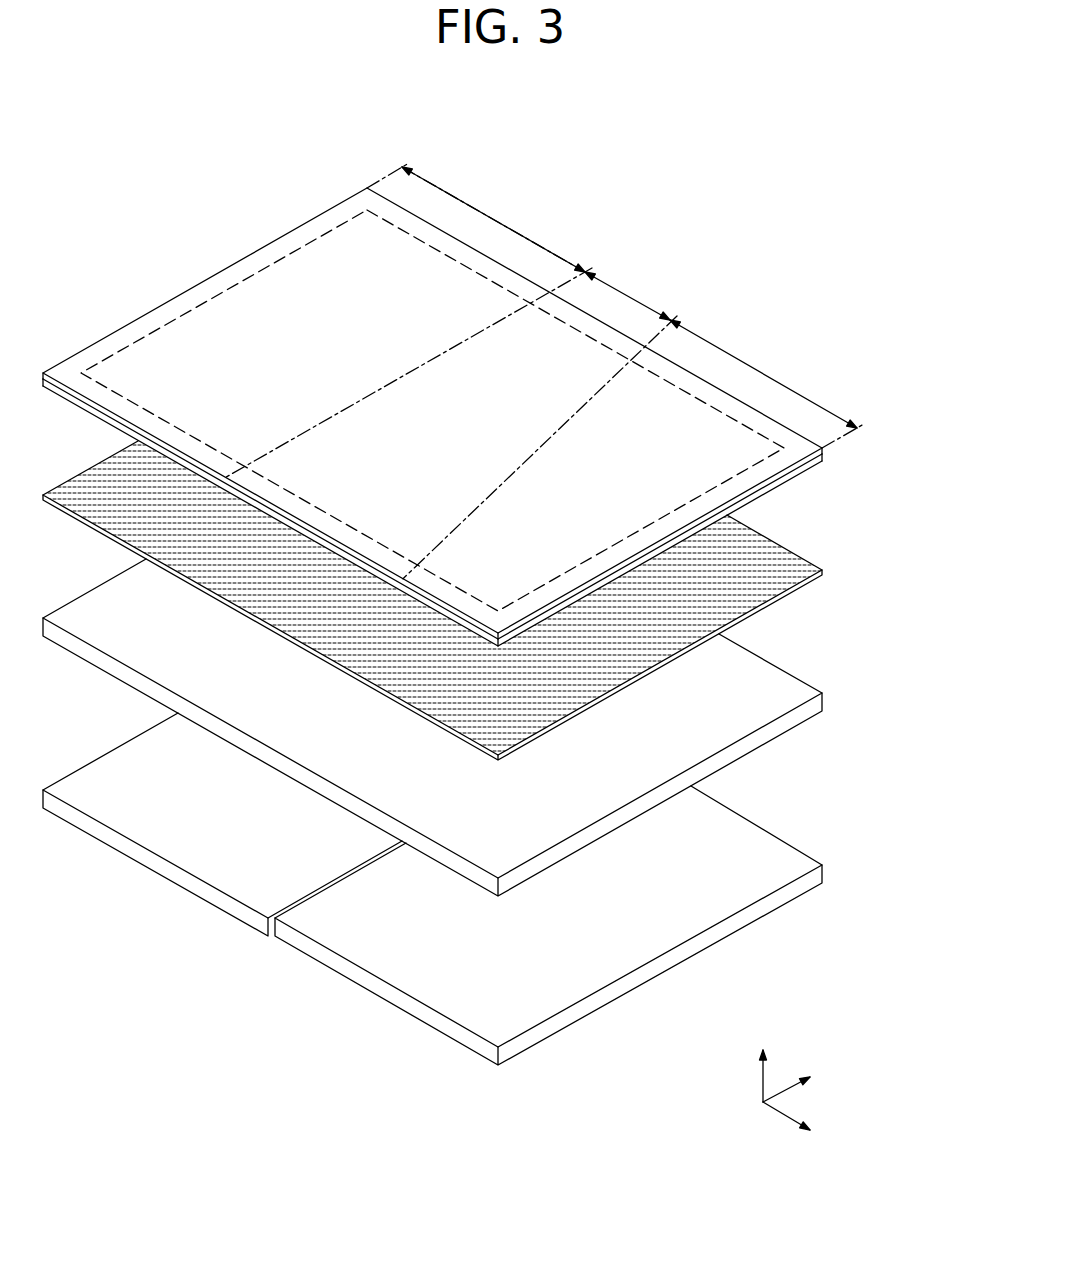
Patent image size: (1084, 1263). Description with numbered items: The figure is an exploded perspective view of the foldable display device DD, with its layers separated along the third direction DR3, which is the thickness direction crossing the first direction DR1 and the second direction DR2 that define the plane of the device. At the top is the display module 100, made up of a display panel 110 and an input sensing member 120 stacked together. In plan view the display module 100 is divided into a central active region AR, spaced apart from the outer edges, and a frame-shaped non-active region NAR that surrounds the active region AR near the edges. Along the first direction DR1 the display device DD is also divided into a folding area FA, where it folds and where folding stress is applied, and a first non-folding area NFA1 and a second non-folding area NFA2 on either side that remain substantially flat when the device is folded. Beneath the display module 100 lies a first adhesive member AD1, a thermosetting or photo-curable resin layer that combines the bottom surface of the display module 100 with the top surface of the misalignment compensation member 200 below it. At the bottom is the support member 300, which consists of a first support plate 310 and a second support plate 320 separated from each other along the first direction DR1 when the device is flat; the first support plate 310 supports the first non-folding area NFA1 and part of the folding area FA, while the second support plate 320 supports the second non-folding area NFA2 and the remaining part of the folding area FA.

The display module 100 is at (502, 404).
The display panel 110 is at (824, 464).
The input sensing member 120 is at (824, 452).
The misalignment compensation member 200 is at (821, 706).
The support member 300 is at (432, 889).
The first support plate 310 is at (527, 925).
The second support plate 320 is at (222, 898).
The first adhesive member AD1 is at (823, 574).
The display device DD is at (757, 293).
The active region AR is at (203, 326).
The non-active region NAR is at (247, 272).
The folding area FA is at (451, 423).
The first non-folding area NFA1 is at (767, 384).
The second non-folding area NFA2 is at (476, 217).
The first direction DR1 is at (809, 1127).
The second direction DR2 is at (809, 1081).
The third direction DR3 is at (762, 1062).